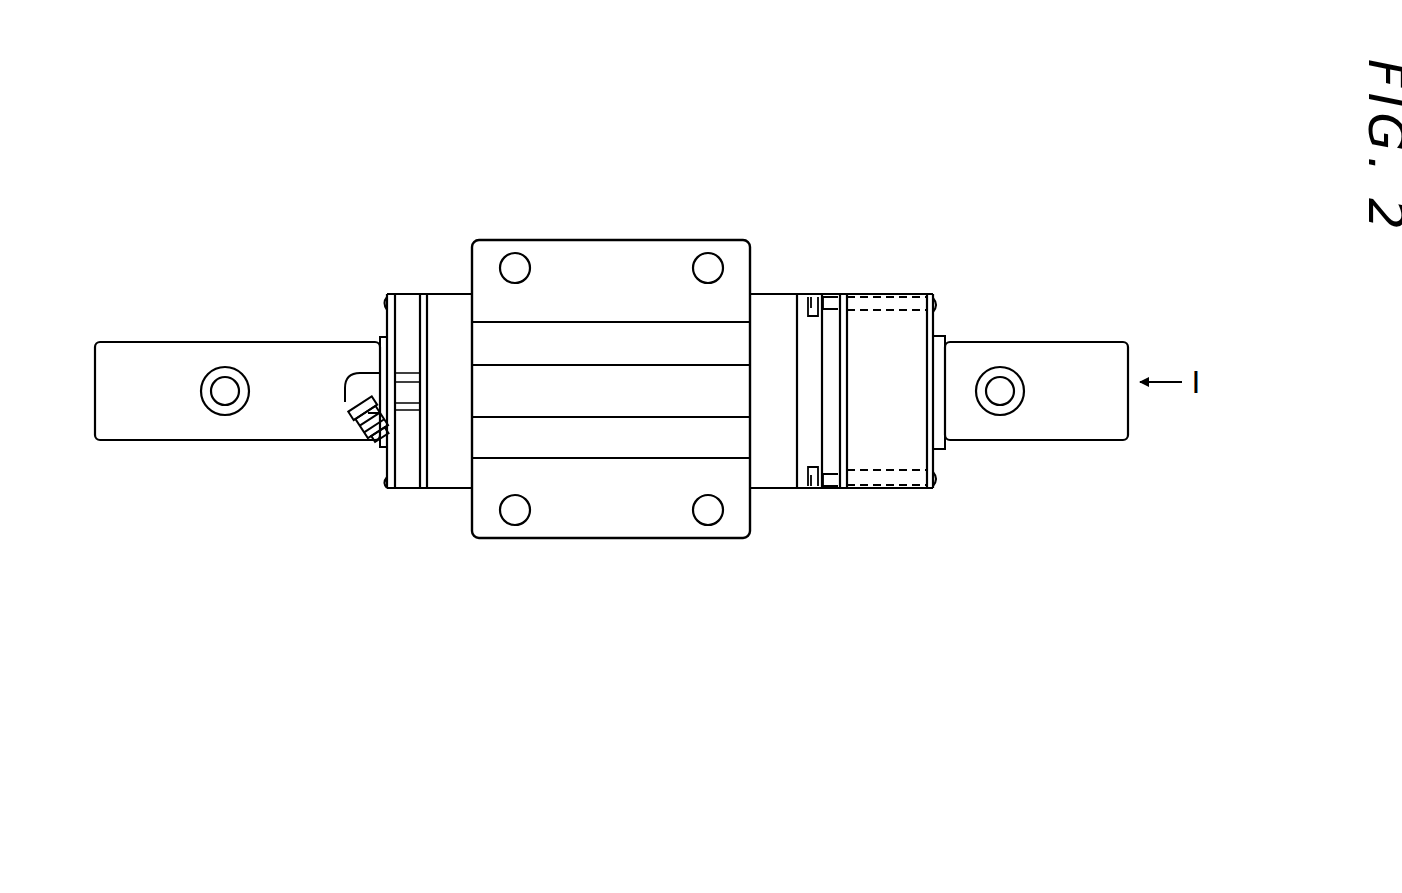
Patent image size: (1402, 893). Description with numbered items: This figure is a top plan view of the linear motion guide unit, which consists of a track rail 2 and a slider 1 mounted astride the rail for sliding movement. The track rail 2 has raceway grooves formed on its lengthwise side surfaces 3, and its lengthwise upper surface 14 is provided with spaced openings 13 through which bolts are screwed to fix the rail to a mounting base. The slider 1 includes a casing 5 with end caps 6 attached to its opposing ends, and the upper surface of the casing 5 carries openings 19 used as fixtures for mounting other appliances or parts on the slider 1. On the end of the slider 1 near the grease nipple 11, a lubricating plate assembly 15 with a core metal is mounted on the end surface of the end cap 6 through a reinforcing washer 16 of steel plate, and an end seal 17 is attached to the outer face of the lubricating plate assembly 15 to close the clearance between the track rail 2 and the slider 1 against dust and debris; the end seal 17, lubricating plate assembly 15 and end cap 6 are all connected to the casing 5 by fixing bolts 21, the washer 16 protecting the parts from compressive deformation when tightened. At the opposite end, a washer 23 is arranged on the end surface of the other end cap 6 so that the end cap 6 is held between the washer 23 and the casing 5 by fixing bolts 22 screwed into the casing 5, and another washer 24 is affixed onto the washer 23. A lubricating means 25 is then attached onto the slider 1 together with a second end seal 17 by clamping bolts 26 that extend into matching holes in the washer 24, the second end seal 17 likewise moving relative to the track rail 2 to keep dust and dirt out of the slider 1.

The slider 1 is at (690, 236).
The track rail 2 is at (288, 377).
The lengthwise side surfaces 3 is at (172, 341).
The casing 5 is at (613, 296).
The end caps 6 is at (450, 310).
The grease nipple 11 is at (330, 437).
The openings 13 is at (225, 385).
The lengthwise upper surface 14 is at (137, 368).
The lubricating plate assembly 15 is at (410, 320).
The reinforcing washer 16 is at (432, 302).
The end seal 17 is at (395, 300).
The openings 19 is at (515, 268).
The fixing bolts 21 is at (385, 302).
The fixing bolts 22 is at (812, 296).
The washer 23 is at (808, 347).
The washer 24 is at (833, 338).
The lubricating means 25 is at (886, 294).
The clamping bolts 26 is at (938, 297).